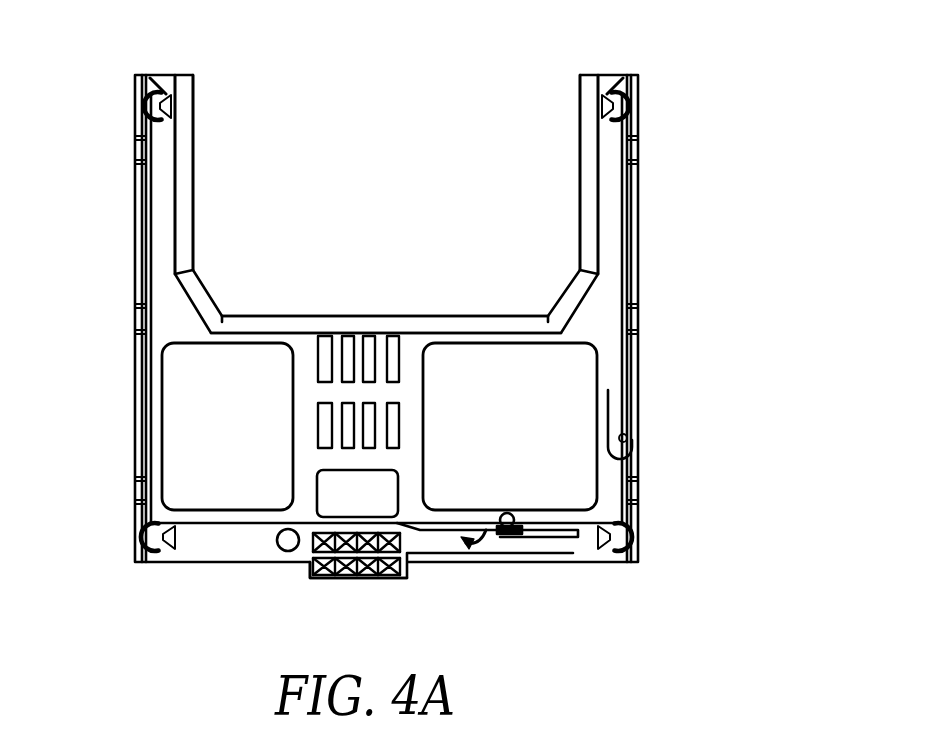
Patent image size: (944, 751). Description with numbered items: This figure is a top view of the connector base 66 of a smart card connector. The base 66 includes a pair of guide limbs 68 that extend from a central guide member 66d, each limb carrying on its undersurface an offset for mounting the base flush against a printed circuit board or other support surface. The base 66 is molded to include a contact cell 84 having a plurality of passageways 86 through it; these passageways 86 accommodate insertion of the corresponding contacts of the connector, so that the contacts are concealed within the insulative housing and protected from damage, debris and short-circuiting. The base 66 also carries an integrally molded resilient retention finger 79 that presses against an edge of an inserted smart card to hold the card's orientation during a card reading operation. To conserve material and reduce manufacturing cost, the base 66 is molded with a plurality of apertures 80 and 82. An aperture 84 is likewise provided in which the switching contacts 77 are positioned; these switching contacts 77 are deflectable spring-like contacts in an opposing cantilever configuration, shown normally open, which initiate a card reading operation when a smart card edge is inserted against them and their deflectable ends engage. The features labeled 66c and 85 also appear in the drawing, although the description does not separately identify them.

The connector base 66 is at (652, 70).
The hook members 66c is at (136, 150).
The central guide member 66d is at (270, 338).
The guide limbs 68 is at (195, 117).
The switching contacts 77 is at (482, 545).
The resilient retention finger 79 is at (624, 436).
The apertures 80 is at (392, 342).
The apertures 82 is at (244, 352).
The contact cell 84 is at (540, 545).
The bottom protrusion 85 is at (311, 571).
The passageways 86 is at (390, 576).